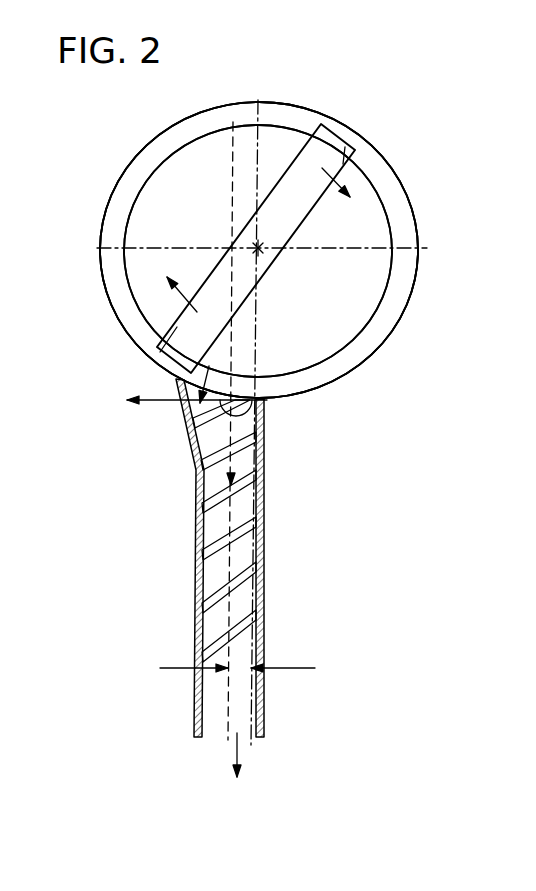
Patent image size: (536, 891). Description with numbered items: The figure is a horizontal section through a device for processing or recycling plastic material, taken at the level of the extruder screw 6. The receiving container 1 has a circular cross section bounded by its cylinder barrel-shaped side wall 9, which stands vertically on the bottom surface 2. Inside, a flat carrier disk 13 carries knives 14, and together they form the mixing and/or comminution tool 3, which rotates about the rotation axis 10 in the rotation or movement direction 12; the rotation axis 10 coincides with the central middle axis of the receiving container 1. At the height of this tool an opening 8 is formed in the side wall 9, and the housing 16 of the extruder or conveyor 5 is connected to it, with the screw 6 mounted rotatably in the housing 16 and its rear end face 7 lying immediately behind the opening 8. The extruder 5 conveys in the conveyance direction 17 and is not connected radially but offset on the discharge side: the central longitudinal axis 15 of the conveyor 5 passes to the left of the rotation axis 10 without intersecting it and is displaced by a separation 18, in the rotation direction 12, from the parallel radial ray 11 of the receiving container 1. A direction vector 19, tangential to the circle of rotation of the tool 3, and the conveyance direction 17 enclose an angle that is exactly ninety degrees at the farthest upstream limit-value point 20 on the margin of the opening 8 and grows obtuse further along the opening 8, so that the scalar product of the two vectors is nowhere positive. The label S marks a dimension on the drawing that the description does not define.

The receiving container 1 is at (160, 127).
The bottom surface 2 is at (402, 212).
The mixing and/or comminution tool 3 is at (353, 312).
The extruder 5 is at (192, 622).
The extruder screw 6 is at (205, 570).
The end face 7 is at (212, 375).
The opening 8 is at (248, 393).
The side wall 9 is at (246, 250).
The rotation axis 10 is at (261, 246).
The radial ray 11 is at (258, 337).
The rotation or movement direction 12 is at (258, 240).
The carrier disk 13 is at (368, 285).
The knives 14 is at (352, 152).
The central longitudinal axis 15 is at (233, 158).
The housing 16 is at (197, 520).
The conveyance direction 17 is at (244, 750).
The separation 18 is at (238, 668).
The direction vector 19 is at (167, 402).
The limit-value point 20 is at (267, 401).
The gap width S is at (190, 445).